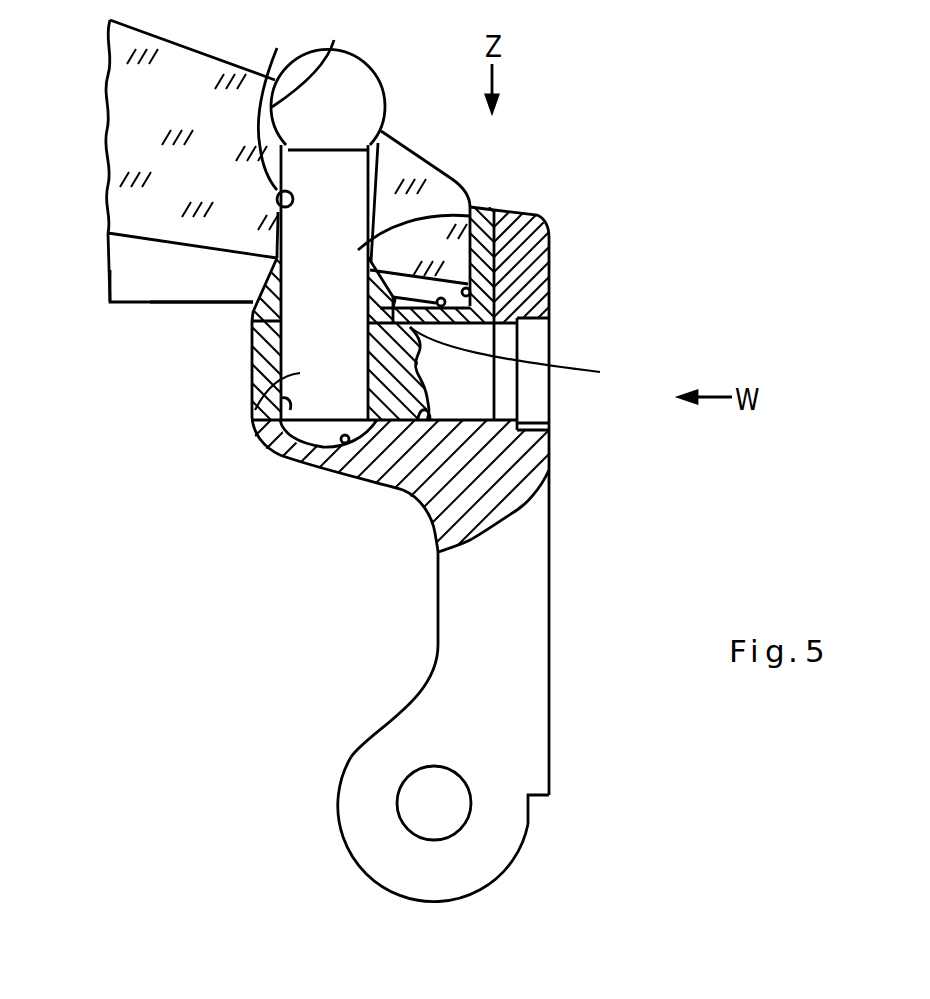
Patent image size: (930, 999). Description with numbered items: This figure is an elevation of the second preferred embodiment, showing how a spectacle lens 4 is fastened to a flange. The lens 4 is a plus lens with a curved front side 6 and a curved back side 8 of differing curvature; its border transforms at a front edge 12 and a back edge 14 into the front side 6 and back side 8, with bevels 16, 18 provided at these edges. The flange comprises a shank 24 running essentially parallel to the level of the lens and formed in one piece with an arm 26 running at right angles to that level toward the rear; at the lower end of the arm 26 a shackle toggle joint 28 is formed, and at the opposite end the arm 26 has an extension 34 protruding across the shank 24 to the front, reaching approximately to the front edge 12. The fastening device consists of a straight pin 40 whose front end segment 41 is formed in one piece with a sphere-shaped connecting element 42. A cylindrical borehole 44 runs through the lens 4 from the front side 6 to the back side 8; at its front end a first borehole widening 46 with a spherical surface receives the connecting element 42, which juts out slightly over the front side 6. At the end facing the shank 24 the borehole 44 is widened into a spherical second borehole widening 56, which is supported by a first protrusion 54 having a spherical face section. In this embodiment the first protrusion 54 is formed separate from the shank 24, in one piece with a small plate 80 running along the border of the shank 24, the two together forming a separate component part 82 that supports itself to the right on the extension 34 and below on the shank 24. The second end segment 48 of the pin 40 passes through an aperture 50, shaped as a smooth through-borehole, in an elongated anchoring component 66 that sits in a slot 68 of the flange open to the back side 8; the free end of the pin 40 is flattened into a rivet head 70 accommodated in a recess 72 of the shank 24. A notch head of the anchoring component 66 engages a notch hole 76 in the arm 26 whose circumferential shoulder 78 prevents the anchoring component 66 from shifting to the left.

The spectacle lens 4 is at (186, 278).
The front side 6 is at (192, 123).
The back side 8 is at (201, 298).
The front edge 12 is at (471, 216).
The back edge 14 is at (373, 335).
The bevel 16 is at (457, 233).
The bevel 18 is at (500, 324).
The shank 24 is at (397, 532).
The arm 26 is at (494, 719).
The shackle toggle joint 28 is at (463, 829).
The extension 34 is at (536, 495).
The pin 40 is at (553, 307).
The front end segment 41 is at (450, 196).
The connecting element 42 is at (360, 232).
The borehole 44 is at (278, 136).
The first borehole widening 46 is at (312, 57).
The second end segment 48 is at (247, 405).
The aperture 50 is at (378, 470).
The first protrusion 54 is at (263, 339).
The second borehole widening 56 is at (415, 333).
The anchoring component 66 is at (237, 447).
The slot 68 is at (412, 492).
The rivet head 70 is at (326, 472).
The recess 72 is at (373, 528).
The notch hole 76 is at (574, 445).
The circumferential shoulder 78 is at (574, 374).
The plate 80 is at (513, 297).
The separate component part 82 is at (534, 491).